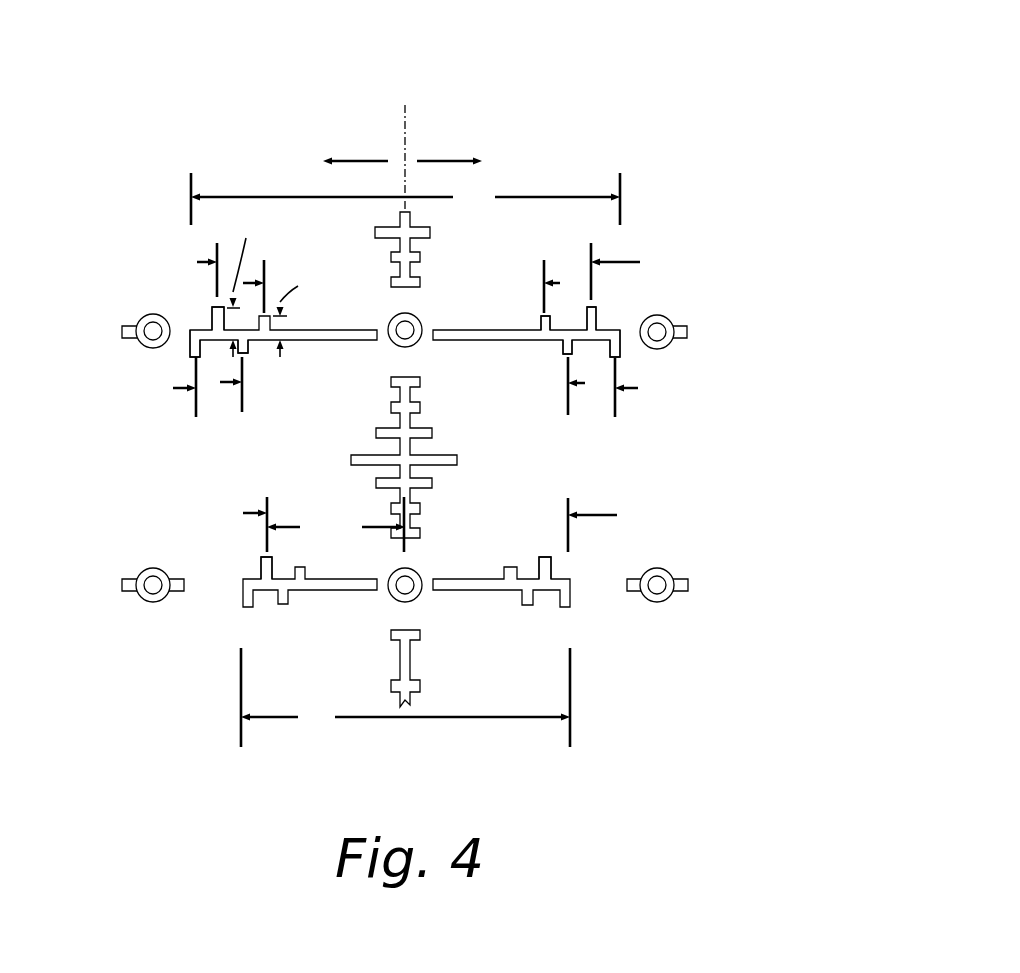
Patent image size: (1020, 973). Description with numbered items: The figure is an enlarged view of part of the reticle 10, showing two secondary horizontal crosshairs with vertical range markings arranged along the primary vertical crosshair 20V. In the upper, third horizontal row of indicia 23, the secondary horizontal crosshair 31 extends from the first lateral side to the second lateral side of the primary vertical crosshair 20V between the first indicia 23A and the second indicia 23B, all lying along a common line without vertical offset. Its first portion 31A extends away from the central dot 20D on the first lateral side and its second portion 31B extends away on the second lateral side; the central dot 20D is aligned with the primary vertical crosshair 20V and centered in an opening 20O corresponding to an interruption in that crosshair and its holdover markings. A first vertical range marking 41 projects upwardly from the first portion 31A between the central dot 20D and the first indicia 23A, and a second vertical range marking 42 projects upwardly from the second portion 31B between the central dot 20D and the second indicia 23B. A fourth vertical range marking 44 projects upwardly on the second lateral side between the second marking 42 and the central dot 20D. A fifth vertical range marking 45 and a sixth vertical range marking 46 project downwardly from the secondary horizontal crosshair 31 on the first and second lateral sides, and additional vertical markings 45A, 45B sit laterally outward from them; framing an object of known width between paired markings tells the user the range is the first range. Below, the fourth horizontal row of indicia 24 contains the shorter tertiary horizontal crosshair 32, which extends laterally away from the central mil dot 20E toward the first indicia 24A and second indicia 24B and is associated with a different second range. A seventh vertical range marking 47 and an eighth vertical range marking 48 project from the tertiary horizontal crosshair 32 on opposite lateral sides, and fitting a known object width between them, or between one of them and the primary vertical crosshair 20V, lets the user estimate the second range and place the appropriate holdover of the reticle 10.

The reticle 10 is at (717, 88).
The primary vertical crosshair 20V is at (408, 217).
The opening 20O is at (407, 300).
The central dot 20D is at (393, 346).
The central mil dot 20E is at (397, 598).
The third horizontal row of indicia 23 is at (745, 327).
The first indicia 23A is at (147, 350).
The second indicia 23B is at (669, 323).
The fourth horizontal row of indicia 24 is at (735, 587).
The first indicia 24A is at (143, 600).
The second indicia 24B is at (666, 571).
The secondary horizontal crosshair 31 is at (193, 328).
The first portion 31A is at (333, 328).
The second portion 31B is at (487, 328).
The tertiary horizontal crosshair 32 is at (250, 577).
The first vertical range marking 41 is at (211, 312).
The second vertical range marking 42 is at (596, 318).
The fourth vertical range marking 44 is at (541, 322).
The fifth vertical range marking 45 is at (250, 347).
The additional vertical marking 45A is at (188, 348).
The additional vertical marking 45B is at (620, 351).
The sixth vertical range marking 46 is at (562, 346).
The seventh vertical range marking 47 is at (260, 562).
The eighth vertical range marking 48 is at (550, 570).